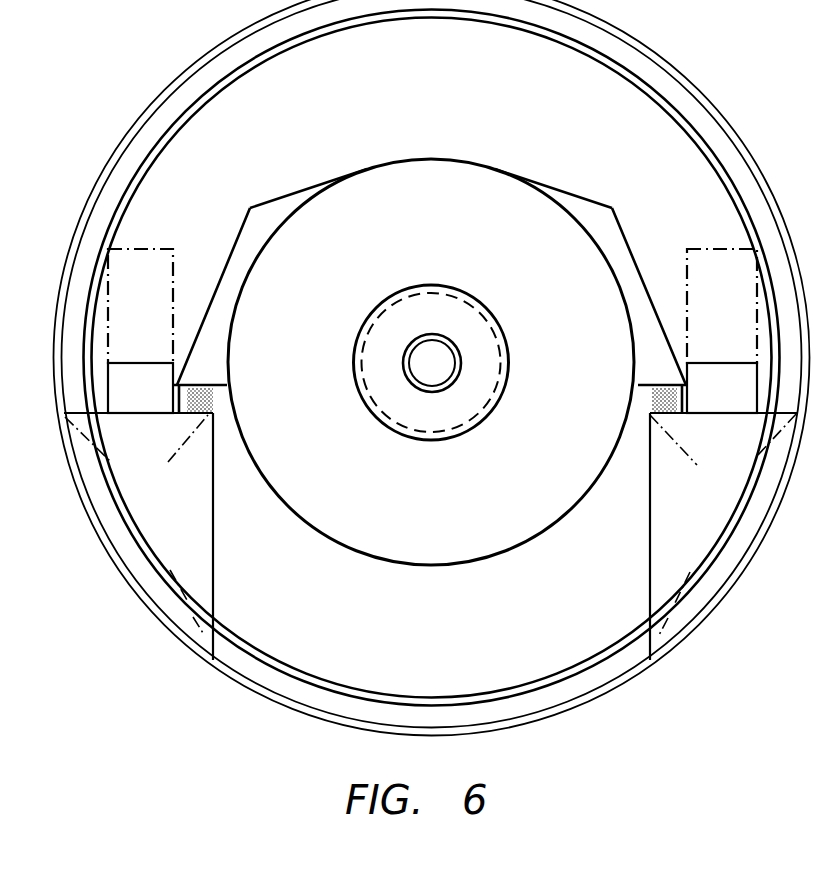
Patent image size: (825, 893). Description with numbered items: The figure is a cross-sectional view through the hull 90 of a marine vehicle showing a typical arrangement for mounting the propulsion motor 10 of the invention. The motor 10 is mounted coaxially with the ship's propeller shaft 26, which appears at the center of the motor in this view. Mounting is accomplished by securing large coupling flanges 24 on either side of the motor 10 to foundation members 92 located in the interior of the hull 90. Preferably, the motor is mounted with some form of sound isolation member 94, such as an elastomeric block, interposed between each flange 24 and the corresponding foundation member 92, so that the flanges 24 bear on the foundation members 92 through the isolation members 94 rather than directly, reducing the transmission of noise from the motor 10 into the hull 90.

The motor 10 is at (341, 164).
The coupling flange 24 is at (207, 336).
The propeller shaft 26 is at (451, 352).
The hull 90 is at (708, 105).
The foundation member 92 is at (137, 507).
The sound isolation member 94 is at (186, 405).